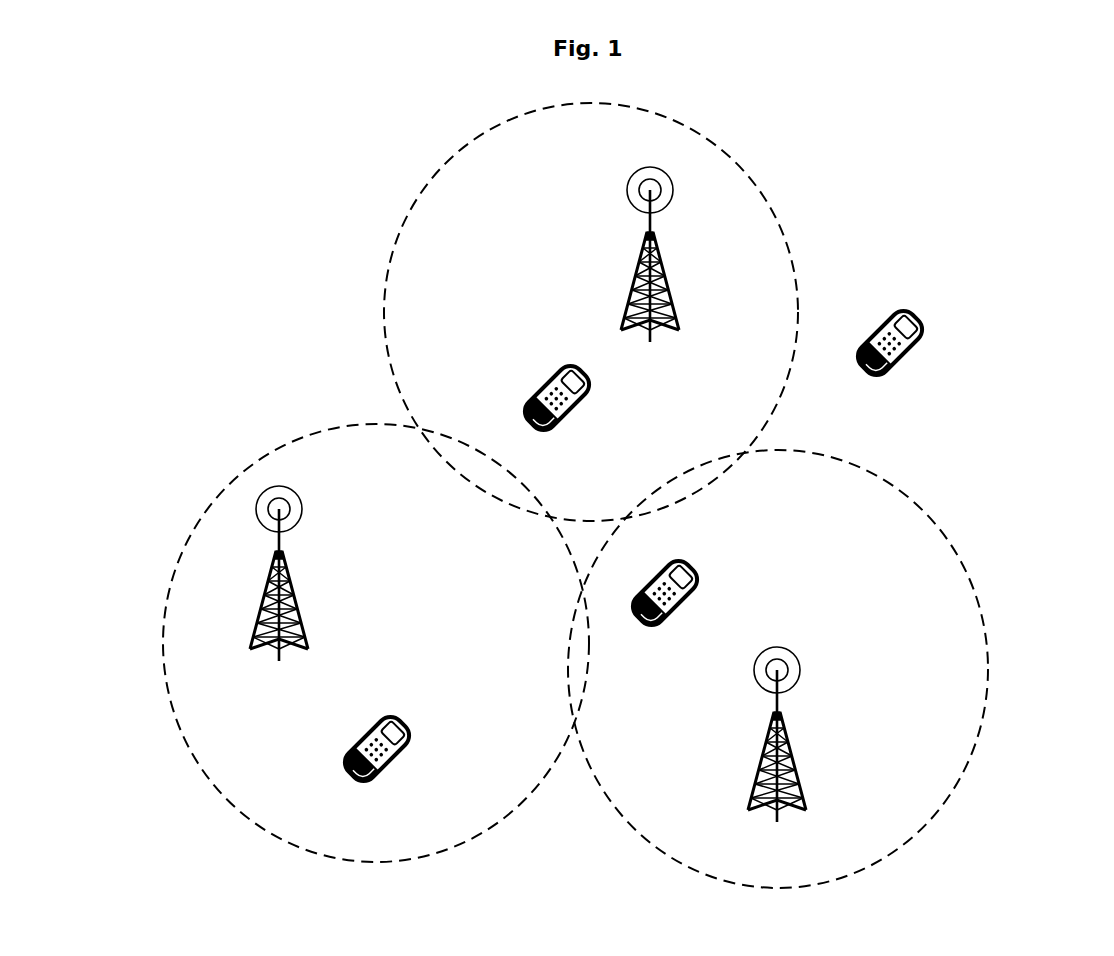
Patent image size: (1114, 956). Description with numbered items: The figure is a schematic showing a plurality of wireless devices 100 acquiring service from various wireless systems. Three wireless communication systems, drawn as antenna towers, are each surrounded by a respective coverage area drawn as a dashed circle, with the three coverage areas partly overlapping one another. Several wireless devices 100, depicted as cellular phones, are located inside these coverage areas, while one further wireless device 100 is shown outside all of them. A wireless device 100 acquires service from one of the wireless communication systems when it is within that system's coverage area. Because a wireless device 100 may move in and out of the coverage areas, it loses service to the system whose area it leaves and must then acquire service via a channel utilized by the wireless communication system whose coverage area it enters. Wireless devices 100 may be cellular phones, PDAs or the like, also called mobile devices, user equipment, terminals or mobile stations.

The wireless device 100 is at (586, 392).